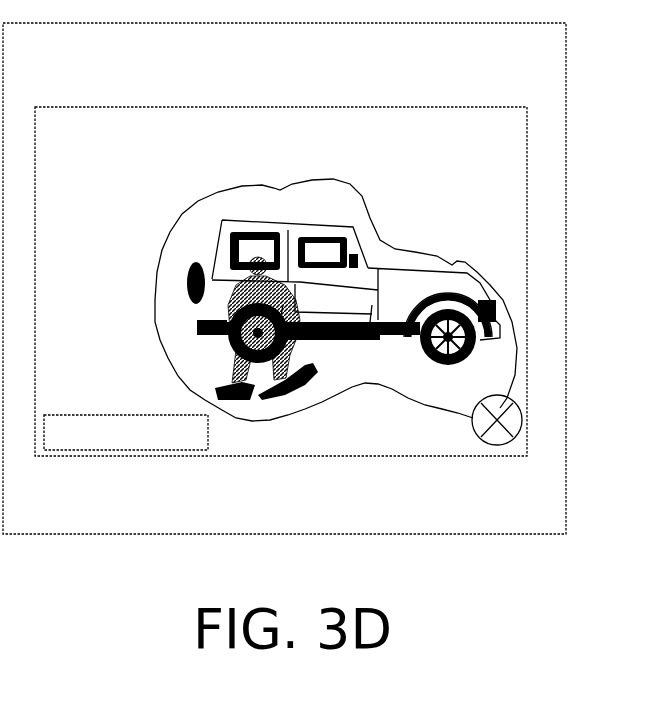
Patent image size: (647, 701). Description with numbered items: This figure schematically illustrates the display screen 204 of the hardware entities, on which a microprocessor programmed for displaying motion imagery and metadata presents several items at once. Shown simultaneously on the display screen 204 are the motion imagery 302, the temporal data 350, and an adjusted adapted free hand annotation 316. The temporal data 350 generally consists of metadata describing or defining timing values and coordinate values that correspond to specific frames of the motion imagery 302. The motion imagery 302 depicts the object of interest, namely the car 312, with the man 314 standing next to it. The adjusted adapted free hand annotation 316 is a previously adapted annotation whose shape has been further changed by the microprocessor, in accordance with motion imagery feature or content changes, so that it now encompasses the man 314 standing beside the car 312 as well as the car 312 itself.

The display screen 204 is at (284, 278).
The motion imagery 302 is at (281, 281).
The car 312 is at (213, 248).
The man 314 is at (206, 338).
The adjusted adapted free hand annotation 316 is at (478, 247).
The temporal data 350 is at (143, 442).